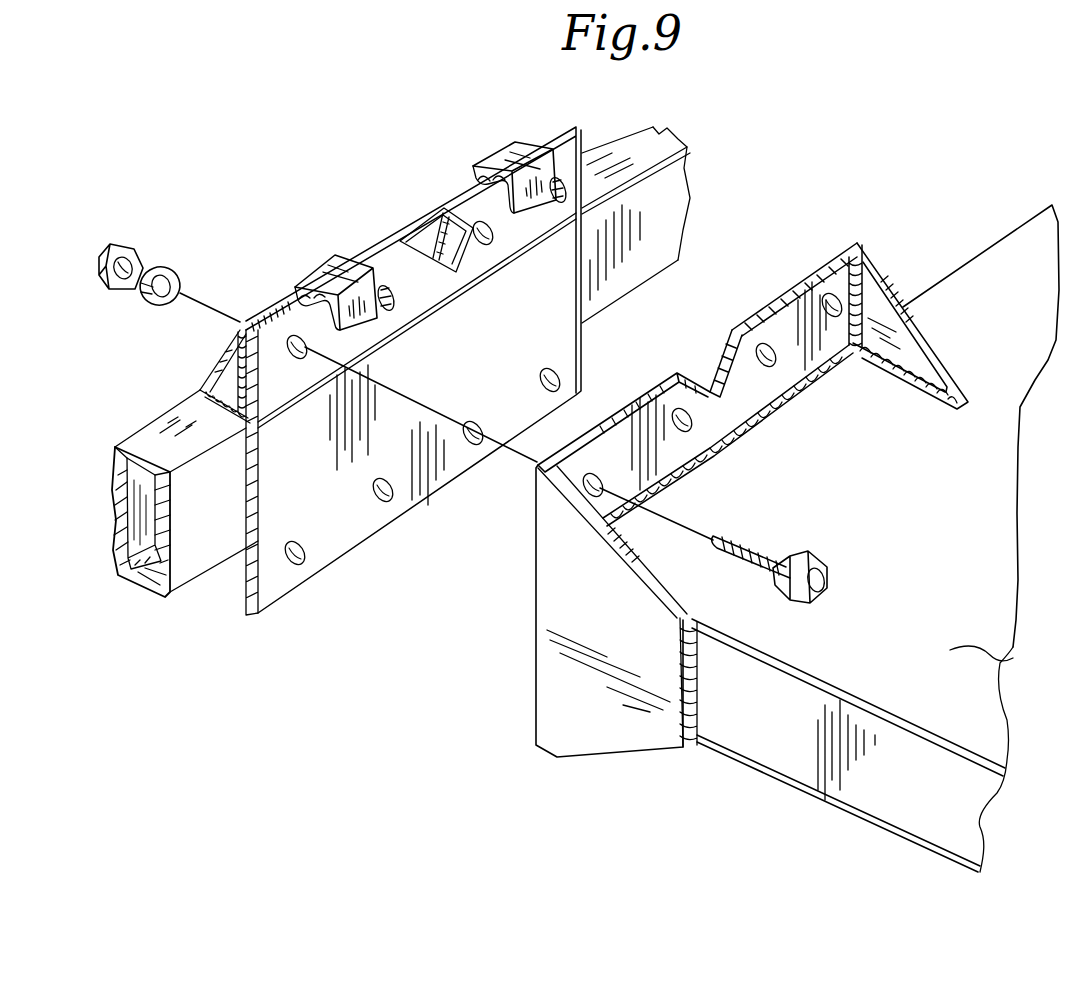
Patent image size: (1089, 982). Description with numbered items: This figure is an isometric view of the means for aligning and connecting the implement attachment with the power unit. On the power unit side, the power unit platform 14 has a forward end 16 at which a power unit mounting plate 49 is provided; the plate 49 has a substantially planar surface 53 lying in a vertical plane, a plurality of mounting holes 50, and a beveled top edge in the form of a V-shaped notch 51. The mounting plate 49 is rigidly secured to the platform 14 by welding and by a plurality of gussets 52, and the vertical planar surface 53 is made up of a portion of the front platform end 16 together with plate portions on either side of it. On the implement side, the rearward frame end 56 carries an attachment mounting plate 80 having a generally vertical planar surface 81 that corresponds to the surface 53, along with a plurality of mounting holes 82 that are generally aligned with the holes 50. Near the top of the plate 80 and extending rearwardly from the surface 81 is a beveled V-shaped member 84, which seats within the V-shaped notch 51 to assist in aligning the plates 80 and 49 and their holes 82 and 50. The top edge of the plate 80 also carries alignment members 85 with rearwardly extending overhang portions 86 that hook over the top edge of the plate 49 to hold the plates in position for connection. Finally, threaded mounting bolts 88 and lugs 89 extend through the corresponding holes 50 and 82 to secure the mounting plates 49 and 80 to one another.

The power unit platform 14 is at (1003, 660).
The forward end 16 is at (1007, 240).
The power unit mounting plate 49 is at (790, 327).
The mounting hole 50 is at (680, 412).
The V-shaped notch 51 is at (723, 343).
The gusset 52 is at (897, 347).
The planar surface 53 is at (590, 402).
The rearward frame end 56 is at (587, 283).
The attachment mounting plate 80 is at (252, 585).
The vertical planar surface 81 is at (425, 465).
The mounting hole 82 is at (383, 288).
The V-shaped member 84 is at (440, 220).
The alignment member 85 is at (497, 160).
The overhang portion 86 is at (537, 200).
The threaded mounting bolt 88 is at (770, 582).
The lug 89 is at (105, 258).